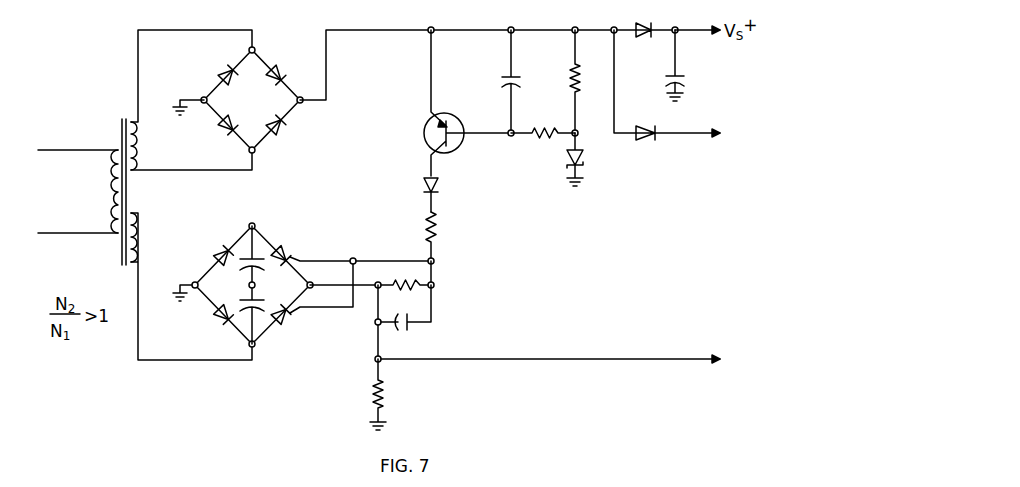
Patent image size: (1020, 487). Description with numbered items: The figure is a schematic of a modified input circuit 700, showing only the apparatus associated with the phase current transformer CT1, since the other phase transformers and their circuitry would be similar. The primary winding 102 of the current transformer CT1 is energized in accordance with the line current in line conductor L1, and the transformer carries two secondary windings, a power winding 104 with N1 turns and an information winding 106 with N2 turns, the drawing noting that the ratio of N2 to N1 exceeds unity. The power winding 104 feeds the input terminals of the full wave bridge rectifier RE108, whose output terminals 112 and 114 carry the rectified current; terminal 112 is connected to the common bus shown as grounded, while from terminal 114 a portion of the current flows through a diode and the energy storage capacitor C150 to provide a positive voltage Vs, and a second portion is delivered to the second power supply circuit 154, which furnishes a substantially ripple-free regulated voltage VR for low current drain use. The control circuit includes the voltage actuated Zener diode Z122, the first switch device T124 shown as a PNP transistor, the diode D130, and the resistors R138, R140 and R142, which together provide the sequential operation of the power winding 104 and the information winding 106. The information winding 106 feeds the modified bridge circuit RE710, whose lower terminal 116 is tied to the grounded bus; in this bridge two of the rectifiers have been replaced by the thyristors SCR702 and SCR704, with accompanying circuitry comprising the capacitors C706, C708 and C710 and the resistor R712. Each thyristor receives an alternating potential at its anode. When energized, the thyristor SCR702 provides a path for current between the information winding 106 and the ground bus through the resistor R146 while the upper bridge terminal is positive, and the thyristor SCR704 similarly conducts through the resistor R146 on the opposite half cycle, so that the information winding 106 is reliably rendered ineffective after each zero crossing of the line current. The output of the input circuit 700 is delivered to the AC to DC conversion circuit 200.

The current transformer CT1 is at (118, 128).
The line conductor L1 is at (75, 191).
The primary winding 102 is at (109, 172).
The first secondary winding turns N1 is at (166, 151).
The power winding 104 is at (142, 118).
The second secondary winding turns N2 is at (170, 253).
The information winding 106 is at (144, 264).
The full wave bridge rectifier RE108 is at (260, 136).
The output terminal 112 is at (202, 98).
The output terminal 114 is at (302, 98).
The first switch device T124 is at (424, 133).
The diode D130 is at (422, 187).
The resistor R142 is at (437, 232).
The resistor R138 is at (568, 75).
The resistor R140 is at (530, 143).
The Zener diode Z122 is at (563, 162).
The capacitor C150 is at (662, 78).
The second power supply circuit 154 is at (749, 88).
The output terminal 116 is at (191, 278).
The bridge circuit RE710 is at (259, 241).
The capacitor C706 is at (243, 257).
The capacitor C708 is at (242, 312).
The thyristor SCR702 is at (293, 246).
The thyristor SCR704 is at (290, 326).
The resistor R712 is at (408, 282).
The capacitor C710 is at (405, 335).
The AC-DC conversion circuit 200 is at (618, 362).
The resistor R146 is at (372, 392).
The input circuit 700 is at (459, 404).